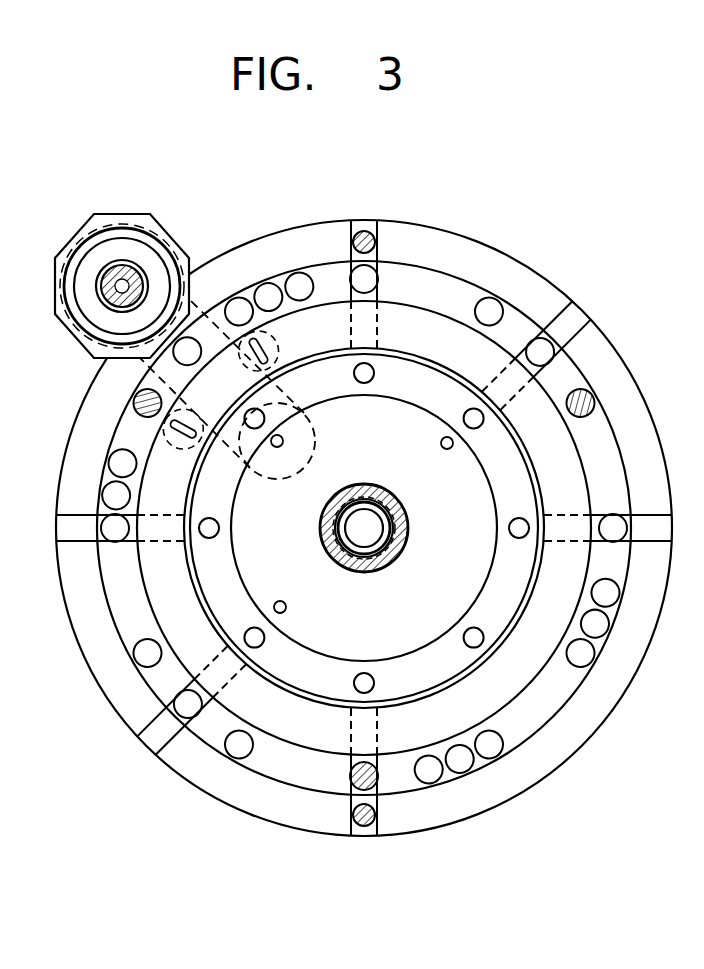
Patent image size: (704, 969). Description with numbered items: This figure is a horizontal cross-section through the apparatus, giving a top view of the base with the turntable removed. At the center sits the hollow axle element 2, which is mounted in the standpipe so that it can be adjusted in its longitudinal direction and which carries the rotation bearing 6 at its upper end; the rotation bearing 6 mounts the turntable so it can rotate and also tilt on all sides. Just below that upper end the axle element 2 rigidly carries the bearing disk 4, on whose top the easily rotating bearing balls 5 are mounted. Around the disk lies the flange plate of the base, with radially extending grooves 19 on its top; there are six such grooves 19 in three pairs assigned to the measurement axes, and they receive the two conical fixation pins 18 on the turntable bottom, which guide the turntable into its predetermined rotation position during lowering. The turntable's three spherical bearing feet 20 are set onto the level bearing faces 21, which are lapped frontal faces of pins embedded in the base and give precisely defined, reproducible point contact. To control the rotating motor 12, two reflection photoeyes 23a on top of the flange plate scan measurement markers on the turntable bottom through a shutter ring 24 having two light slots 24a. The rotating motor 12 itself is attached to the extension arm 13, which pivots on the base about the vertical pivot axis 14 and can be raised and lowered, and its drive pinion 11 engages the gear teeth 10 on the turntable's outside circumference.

The axle element 2 is at (391, 517).
The bearing disk 4 is at (405, 608).
The bearing balls 5 is at (509, 533).
The rotation bearing 6 is at (385, 489).
The gear teeth 10 is at (60, 525).
The drive pinion 11 is at (158, 241).
The rotating motor 12 is at (120, 220).
The extension arm 13 is at (216, 322).
The vertical pivot axis 14 is at (284, 440).
The fixation pins 18 is at (368, 242).
The grooves 19 is at (358, 224).
The bearing feet 20 is at (597, 393).
The bearing faces 21 is at (497, 302).
The reflection photoeyes 23a is at (262, 723).
The shutter ring 24 is at (140, 553).
The light slots 24a is at (197, 612).